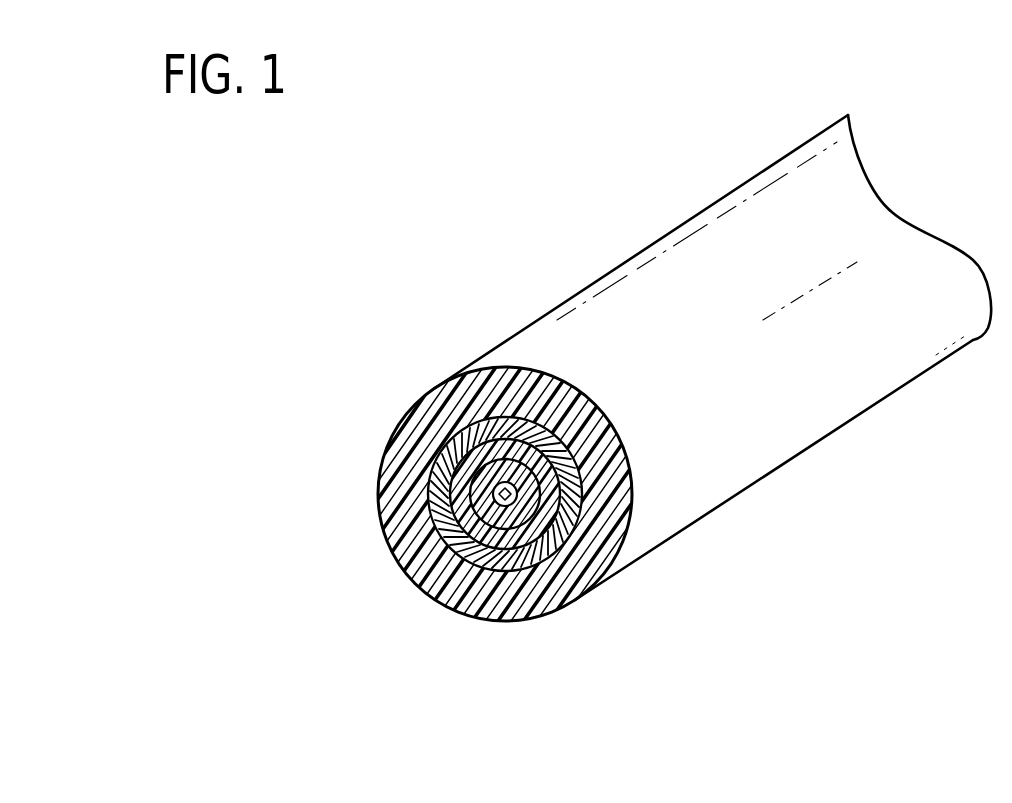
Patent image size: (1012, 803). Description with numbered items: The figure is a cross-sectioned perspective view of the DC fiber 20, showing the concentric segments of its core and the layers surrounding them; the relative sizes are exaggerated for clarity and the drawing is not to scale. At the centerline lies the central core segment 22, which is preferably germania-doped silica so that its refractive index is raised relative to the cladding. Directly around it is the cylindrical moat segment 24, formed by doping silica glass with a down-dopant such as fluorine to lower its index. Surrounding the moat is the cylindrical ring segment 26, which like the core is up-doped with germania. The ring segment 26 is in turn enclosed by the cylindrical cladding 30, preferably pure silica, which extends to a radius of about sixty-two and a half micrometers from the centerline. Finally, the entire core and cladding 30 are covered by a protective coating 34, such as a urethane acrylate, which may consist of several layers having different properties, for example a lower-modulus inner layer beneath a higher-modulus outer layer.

The DC fiber 20 is at (548, 224).
The central core segment 22 is at (445, 455).
The moat segment 24 is at (577, 465).
The ring segment 26 is at (447, 540).
The cladding 30 is at (527, 572).
The protective coating 34 is at (525, 377).